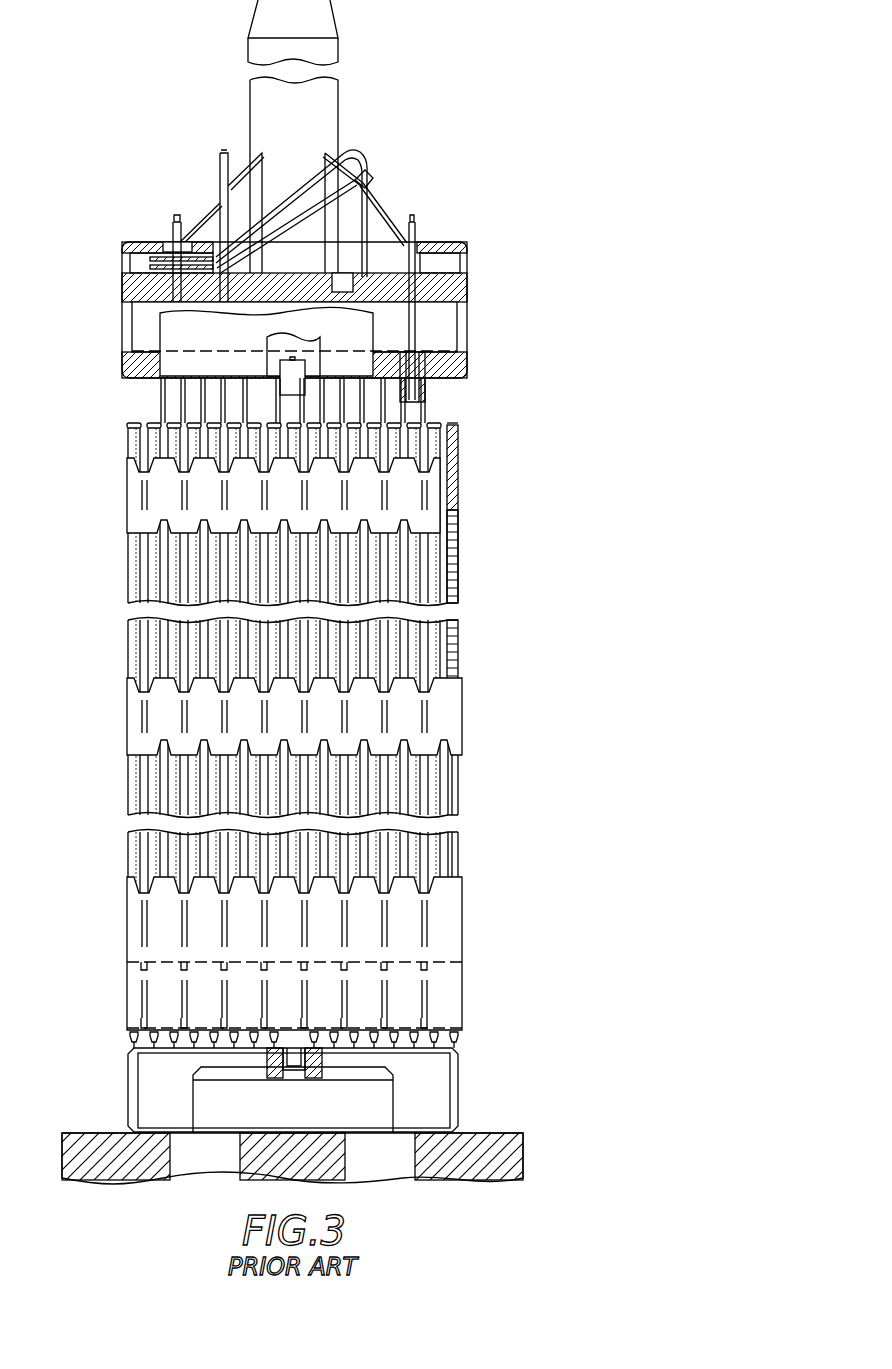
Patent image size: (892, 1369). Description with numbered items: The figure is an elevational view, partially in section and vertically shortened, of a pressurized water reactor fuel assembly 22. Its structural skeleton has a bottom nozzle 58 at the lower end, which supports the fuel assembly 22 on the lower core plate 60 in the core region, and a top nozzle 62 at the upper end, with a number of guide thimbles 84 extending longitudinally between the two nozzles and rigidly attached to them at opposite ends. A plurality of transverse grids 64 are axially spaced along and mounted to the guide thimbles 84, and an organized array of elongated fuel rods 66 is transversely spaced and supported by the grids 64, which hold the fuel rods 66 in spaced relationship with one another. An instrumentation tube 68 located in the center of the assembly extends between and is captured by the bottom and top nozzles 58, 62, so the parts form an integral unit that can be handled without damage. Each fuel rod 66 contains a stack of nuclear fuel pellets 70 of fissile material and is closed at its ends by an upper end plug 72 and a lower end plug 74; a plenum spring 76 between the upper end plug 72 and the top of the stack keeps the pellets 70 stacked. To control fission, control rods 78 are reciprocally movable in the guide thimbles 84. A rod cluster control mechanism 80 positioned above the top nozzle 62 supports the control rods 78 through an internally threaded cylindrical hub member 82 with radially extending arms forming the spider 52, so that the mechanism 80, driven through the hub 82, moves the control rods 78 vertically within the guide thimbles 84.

The fuel assembly 22 is at (552, 293).
The spider 52 is at (247, 166).
The bottom nozzle 58 is at (491, 1043).
The base plate 60 is at (474, 1133).
The top nozzle 62 is at (484, 285).
The transverse grids 64 is at (127, 490).
The fuel rods 66 is at (128, 643).
The instrumentation tube 68 is at (302, 1052).
The nuclear fuel pellets 70 is at (458, 573).
The upper end plug 72 is at (460, 425).
The lower end plug 74 is at (350, 1048).
The plenum spring 76 is at (460, 473).
The control rods 78 is at (462, 340).
The rod cluster control mechanism 80 is at (378, 141).
The cylindrical hub member 82 is at (340, 92).
The guide thimbles 84 is at (160, 405).